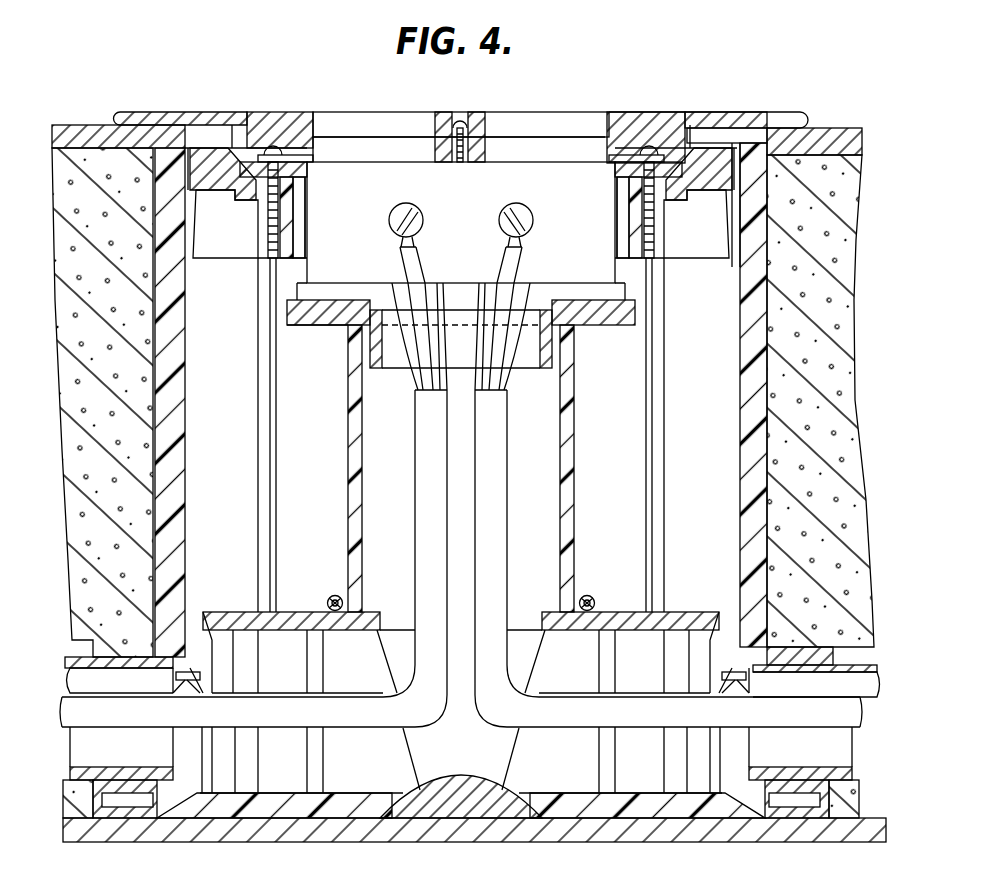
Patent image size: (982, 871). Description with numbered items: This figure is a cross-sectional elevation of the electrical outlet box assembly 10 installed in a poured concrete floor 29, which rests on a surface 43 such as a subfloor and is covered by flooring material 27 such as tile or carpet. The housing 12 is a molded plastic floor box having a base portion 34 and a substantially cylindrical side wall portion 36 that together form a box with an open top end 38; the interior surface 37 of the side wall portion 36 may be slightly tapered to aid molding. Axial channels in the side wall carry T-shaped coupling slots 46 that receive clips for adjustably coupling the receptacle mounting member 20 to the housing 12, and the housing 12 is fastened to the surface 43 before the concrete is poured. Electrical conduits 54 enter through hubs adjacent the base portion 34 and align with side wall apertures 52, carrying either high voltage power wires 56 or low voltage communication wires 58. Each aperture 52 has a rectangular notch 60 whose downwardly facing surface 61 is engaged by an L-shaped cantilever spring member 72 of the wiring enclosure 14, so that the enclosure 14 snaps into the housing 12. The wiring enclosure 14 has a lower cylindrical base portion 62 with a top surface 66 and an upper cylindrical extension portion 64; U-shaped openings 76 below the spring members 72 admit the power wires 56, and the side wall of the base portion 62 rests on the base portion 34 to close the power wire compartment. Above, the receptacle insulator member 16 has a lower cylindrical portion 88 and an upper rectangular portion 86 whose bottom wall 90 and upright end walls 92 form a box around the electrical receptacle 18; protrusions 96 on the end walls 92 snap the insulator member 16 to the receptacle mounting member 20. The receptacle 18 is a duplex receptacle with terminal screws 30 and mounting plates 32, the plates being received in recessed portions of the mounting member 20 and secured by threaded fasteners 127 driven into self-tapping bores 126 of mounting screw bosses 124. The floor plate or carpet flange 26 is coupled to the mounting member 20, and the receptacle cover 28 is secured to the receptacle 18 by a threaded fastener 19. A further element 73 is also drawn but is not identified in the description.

The electrical outlet box assembly 10 is at (815, 108).
The housing 12 is at (775, 423).
The wiring enclosure 14 is at (584, 497).
The receptacle insulator member 16 is at (606, 335).
The electrical receptacle 18 is at (518, 130).
The threaded fastener 19 is at (463, 118).
The receptacle mounting member 20 is at (240, 268).
The floor plate or carpet flange 26 is at (120, 110).
The flooring material 27 is at (846, 129).
The receptacle cover 28 is at (288, 112).
The poured concrete floor 29 is at (852, 258).
The terminal screws 30 is at (507, 218).
The mounting plates 32 is at (310, 163).
The base portion 34 is at (353, 796).
The side wall portion 36 is at (177, 365).
The interior surface 37 is at (186, 465).
The open top end 38 is at (732, 143).
The surface 43 is at (726, 840).
The coupling slot 46 is at (256, 420).
The side wall aperture 52 is at (184, 767).
The electrical conduit 54 is at (74, 659).
The power wires 56 is at (72, 669).
The communication wires 58 is at (334, 596).
The rectangular notch 60 is at (182, 689).
The downwardly facing surface 61 is at (178, 676).
The lower base portion 62 is at (338, 681).
The upper cylindrical extension portion 64 is at (348, 479).
The top surface 66 is at (295, 612).
The cantilever spring members 72 is at (214, 634).
The flange 73 is at (190, 672).
The U-shaped openings 76 is at (213, 760).
The upper rectangular portion 86 is at (297, 327).
The lower cylindrical portion 88 is at (377, 372).
The bottom wall 90 is at (322, 311).
The end walls 92 is at (307, 278).
The protrusions 96 is at (300, 192).
The mounting screw boss 124 is at (258, 282).
The self-tapping bore 126 is at (297, 252).
The threaded fastener 127 is at (293, 236).